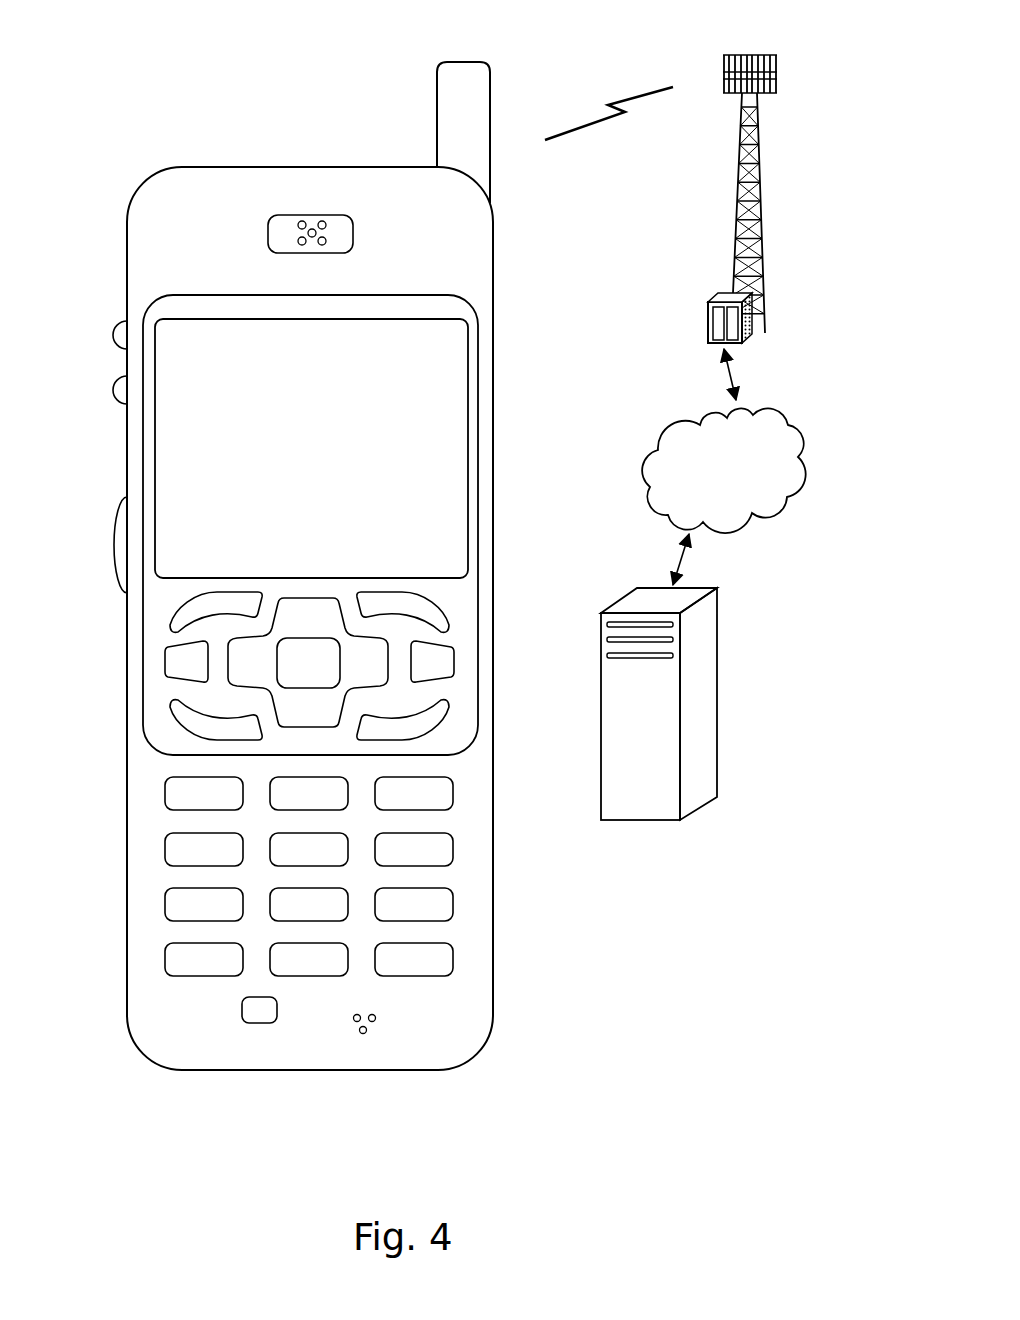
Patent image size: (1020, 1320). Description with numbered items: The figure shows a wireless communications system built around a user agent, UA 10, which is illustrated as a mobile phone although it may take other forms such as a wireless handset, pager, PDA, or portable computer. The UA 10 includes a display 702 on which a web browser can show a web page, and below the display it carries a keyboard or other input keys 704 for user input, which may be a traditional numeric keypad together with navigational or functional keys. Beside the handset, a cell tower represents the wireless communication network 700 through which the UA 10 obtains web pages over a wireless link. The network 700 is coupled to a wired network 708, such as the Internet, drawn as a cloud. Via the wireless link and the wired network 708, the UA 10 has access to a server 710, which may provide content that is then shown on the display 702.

The user agent (UA) 10 is at (171, 1070).
The display 702 is at (477, 333).
The input keys 704 is at (502, 590).
The wireless communication network 700 is at (737, 210).
The wired network 708 is at (656, 510).
The server 710 is at (640, 820).